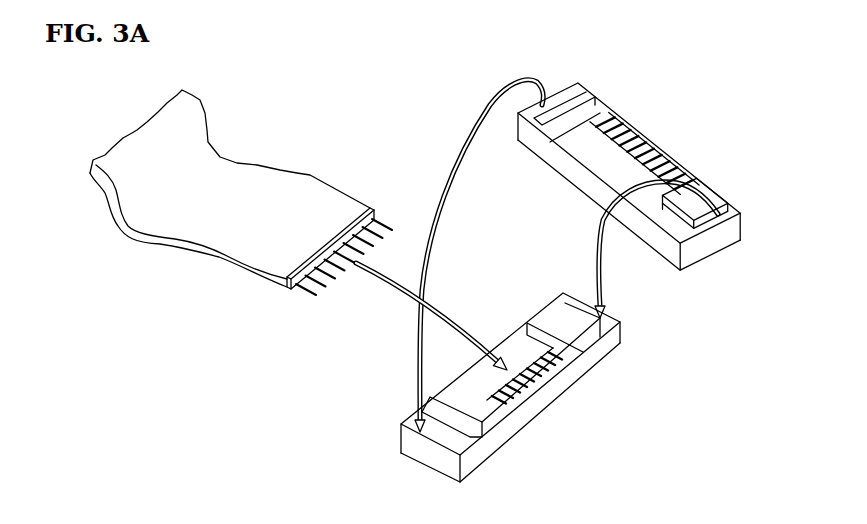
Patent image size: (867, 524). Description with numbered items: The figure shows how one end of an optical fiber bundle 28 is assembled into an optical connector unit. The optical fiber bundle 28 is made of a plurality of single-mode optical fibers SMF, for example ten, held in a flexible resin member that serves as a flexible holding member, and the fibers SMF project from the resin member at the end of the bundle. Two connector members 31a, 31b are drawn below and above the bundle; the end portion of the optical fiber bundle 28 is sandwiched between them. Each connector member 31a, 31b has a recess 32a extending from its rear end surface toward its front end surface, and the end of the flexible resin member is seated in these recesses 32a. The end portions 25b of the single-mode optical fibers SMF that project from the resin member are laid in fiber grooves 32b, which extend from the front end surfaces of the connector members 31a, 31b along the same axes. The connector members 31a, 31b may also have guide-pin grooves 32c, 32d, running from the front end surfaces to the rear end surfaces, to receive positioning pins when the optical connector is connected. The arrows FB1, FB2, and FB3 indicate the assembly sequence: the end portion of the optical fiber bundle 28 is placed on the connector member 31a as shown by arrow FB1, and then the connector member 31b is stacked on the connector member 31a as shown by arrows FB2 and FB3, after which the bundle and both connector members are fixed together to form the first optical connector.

The optical fiber bundle 28 is at (310, 173).
The end portions of the single-mode optical fibers 25b is at (388, 220).
The single-mode optical fibers SMF is at (305, 295).
The arrow FB1 is at (392, 290).
The arrow FB2 is at (414, 370).
The arrow FB3 is at (600, 232).
The connector member 31a is at (627, 337).
The connector member 31b is at (707, 250).
The recesses 32a is at (512, 352).
The fiber grooves 32b is at (590, 348).
The guide-pin groove 32c is at (443, 432).
The guide-pin groove 32d is at (566, 312).